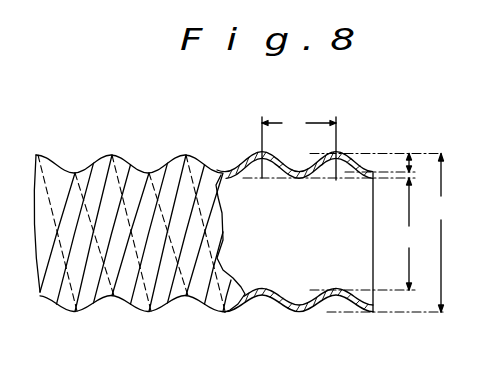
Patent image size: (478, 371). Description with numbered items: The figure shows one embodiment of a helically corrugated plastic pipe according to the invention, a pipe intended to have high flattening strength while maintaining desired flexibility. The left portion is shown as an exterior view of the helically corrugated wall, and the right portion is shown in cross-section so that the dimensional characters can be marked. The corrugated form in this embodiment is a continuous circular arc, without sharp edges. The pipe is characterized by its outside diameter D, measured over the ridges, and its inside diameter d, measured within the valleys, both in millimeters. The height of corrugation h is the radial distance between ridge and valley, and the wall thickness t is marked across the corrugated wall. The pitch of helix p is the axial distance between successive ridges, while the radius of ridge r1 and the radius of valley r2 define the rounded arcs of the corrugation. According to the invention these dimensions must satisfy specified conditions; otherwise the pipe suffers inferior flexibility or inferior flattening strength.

The pitch of helix p is at (299, 146).
The radius of ridge r1 is at (289, 172).
The radius of valley r2 is at (270, 159).
The wall thickness t is at (342, 181).
The height of corrugation h is at (416, 165).
The inside diameter d is at (417, 234).
The outside diameter D is at (452, 198).